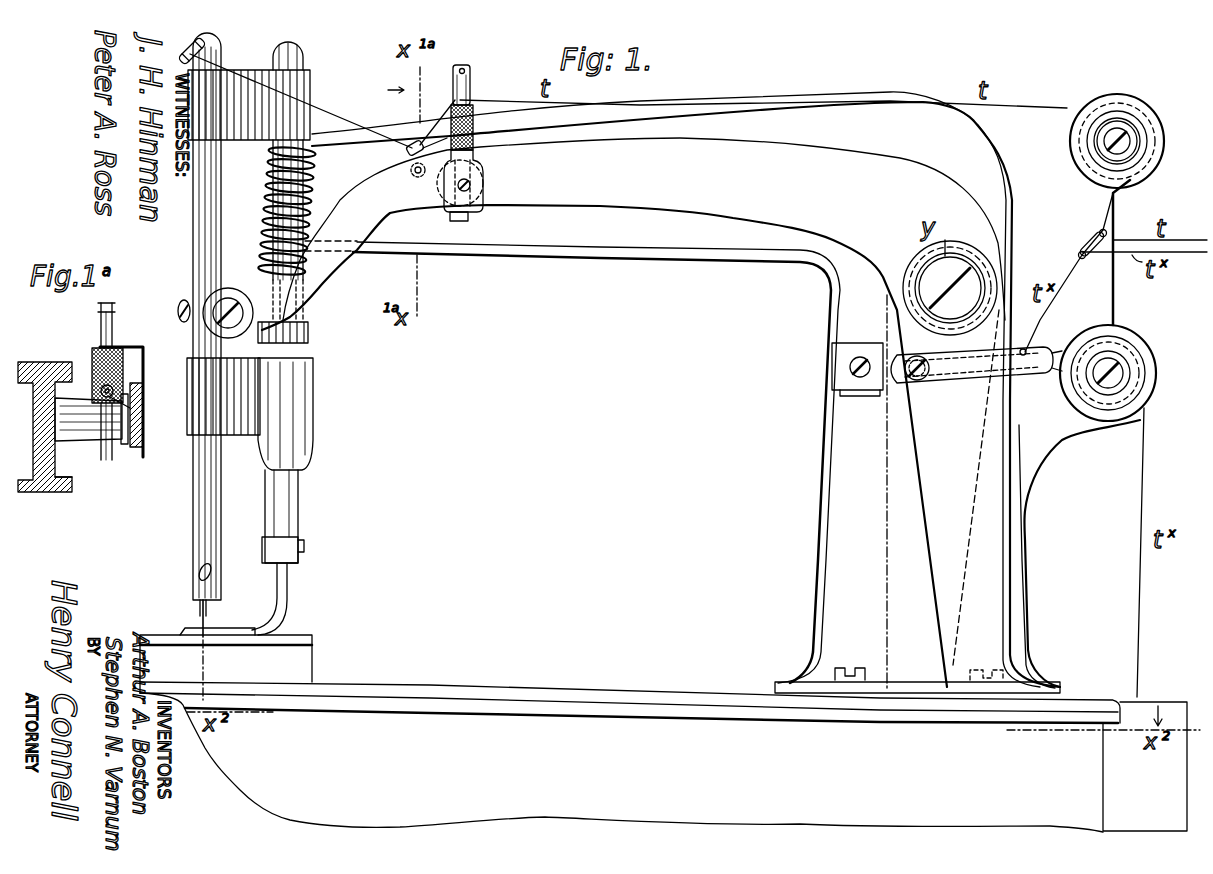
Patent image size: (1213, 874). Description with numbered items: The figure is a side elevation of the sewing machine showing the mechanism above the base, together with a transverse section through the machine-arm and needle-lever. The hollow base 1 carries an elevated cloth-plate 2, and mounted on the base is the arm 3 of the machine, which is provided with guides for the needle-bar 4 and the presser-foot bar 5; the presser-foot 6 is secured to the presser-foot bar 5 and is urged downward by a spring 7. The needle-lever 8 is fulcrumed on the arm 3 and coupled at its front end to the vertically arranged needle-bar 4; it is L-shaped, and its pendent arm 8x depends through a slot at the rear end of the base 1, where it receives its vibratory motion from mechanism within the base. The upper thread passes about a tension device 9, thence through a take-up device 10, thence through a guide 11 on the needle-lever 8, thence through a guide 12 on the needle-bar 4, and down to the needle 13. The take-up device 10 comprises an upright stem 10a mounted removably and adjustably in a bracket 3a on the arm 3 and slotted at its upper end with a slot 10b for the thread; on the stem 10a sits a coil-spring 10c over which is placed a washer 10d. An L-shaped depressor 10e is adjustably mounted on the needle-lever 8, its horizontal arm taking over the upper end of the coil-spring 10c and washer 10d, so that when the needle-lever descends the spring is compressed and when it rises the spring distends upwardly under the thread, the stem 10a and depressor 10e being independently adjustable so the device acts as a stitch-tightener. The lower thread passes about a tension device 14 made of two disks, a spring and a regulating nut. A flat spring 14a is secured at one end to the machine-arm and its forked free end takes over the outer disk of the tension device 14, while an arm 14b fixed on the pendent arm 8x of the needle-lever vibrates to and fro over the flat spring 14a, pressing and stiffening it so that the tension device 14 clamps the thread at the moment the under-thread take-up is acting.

In FIG. 1, the base 1 is at (663, 757).
In FIG. 1, the cloth-plate 2 is at (297, 641).
In FIG. 1, the arm 3 is at (671, 402).
In FIG. 1A, the arm 3 is at (36, 362).
In FIG. 1A, the bracket 3a is at (69, 462).
In FIG. 1, the needle-bar 4 is at (195, 254).
In FIG. 1, the presser-foot bar 5 is at (296, 485).
In FIG. 1, the presser-foot 6 is at (243, 632).
In FIG. 1, the spring 7 is at (309, 201).
In FIG. 1, the needle-lever 8 is at (623, 378).
In FIG. 1A, the needle-lever 8 is at (146, 446).
In FIG. 1, the pendent arm 8x is at (972, 487).
In FIG. 1, the tension device 9 is at (1127, 96).
In FIG. 1, the take-up device 10 is at (473, 67).
In FIG. 1, the upright stem 10a is at (473, 80).
In FIG. 1A, the upright stem 10a is at (100, 338).
In FIG. 1, the slot 10b is at (178, 312).
In FIG. 1, the coil-spring 10c is at (450, 121).
In FIG. 1A, the coil-spring 10c is at (101, 392).
In FIG. 1A, the washer 10d is at (92, 351).
In FIG. 1, the depressor 10e is at (485, 141).
In FIG. 1A, the depressor 10e is at (146, 370).
In FIG. 1, the guide 11 is at (412, 155).
In FIG. 1, the guide 12 is at (189, 46).
In FIG. 1, the needle 13 is at (200, 618).
In FIG. 1, the tension device 14 is at (1158, 368).
In FIG. 1, the flat spring 14a is at (1042, 388).
In FIG. 1, the arm 14b is at (947, 369).